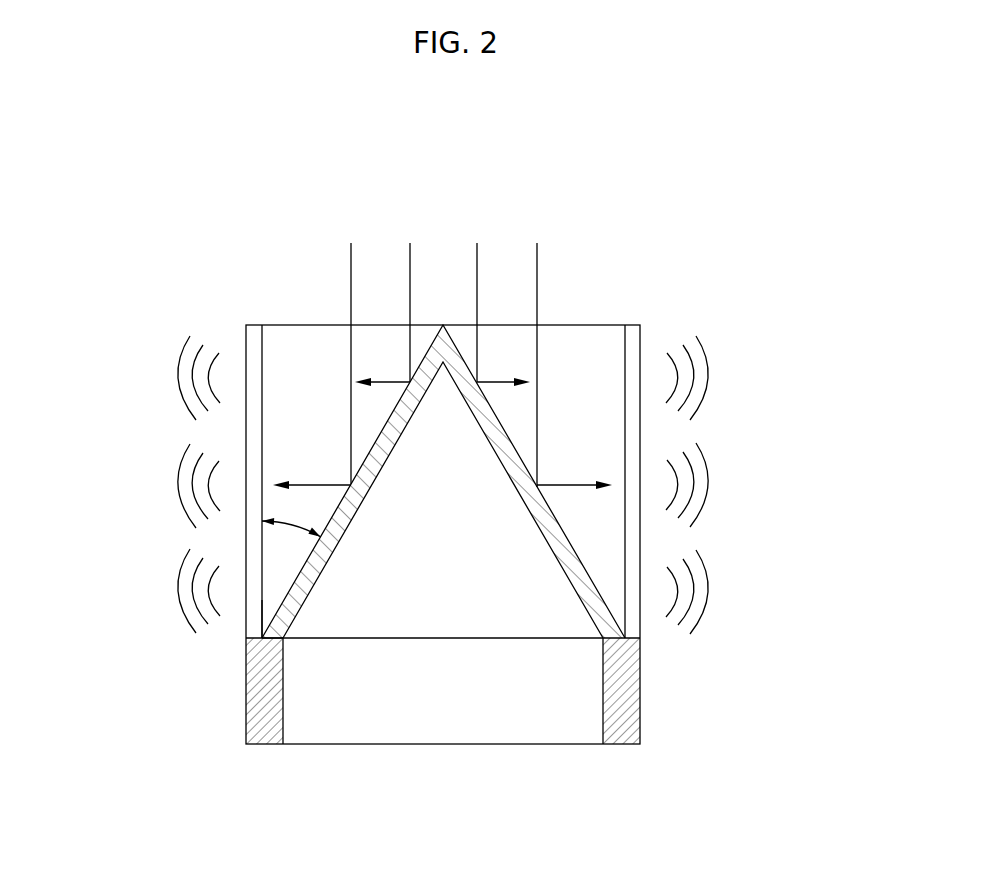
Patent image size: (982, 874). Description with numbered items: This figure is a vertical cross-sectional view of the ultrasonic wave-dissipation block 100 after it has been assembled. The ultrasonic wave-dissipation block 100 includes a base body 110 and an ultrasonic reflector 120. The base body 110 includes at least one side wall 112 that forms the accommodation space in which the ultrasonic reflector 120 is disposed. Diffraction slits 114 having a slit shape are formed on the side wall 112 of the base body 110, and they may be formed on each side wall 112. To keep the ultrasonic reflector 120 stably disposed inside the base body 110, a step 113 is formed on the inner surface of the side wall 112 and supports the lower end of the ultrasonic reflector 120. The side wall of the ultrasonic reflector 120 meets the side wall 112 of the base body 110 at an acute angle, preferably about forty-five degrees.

The ultrasonic wave-dissipation block 100 is at (583, 217).
The base body 110 is at (648, 327).
The side wall 112 is at (628, 693).
The step 113 is at (262, 636).
The diffraction slits 114 is at (633, 561).
The ultrasonic reflector 120 is at (568, 598).